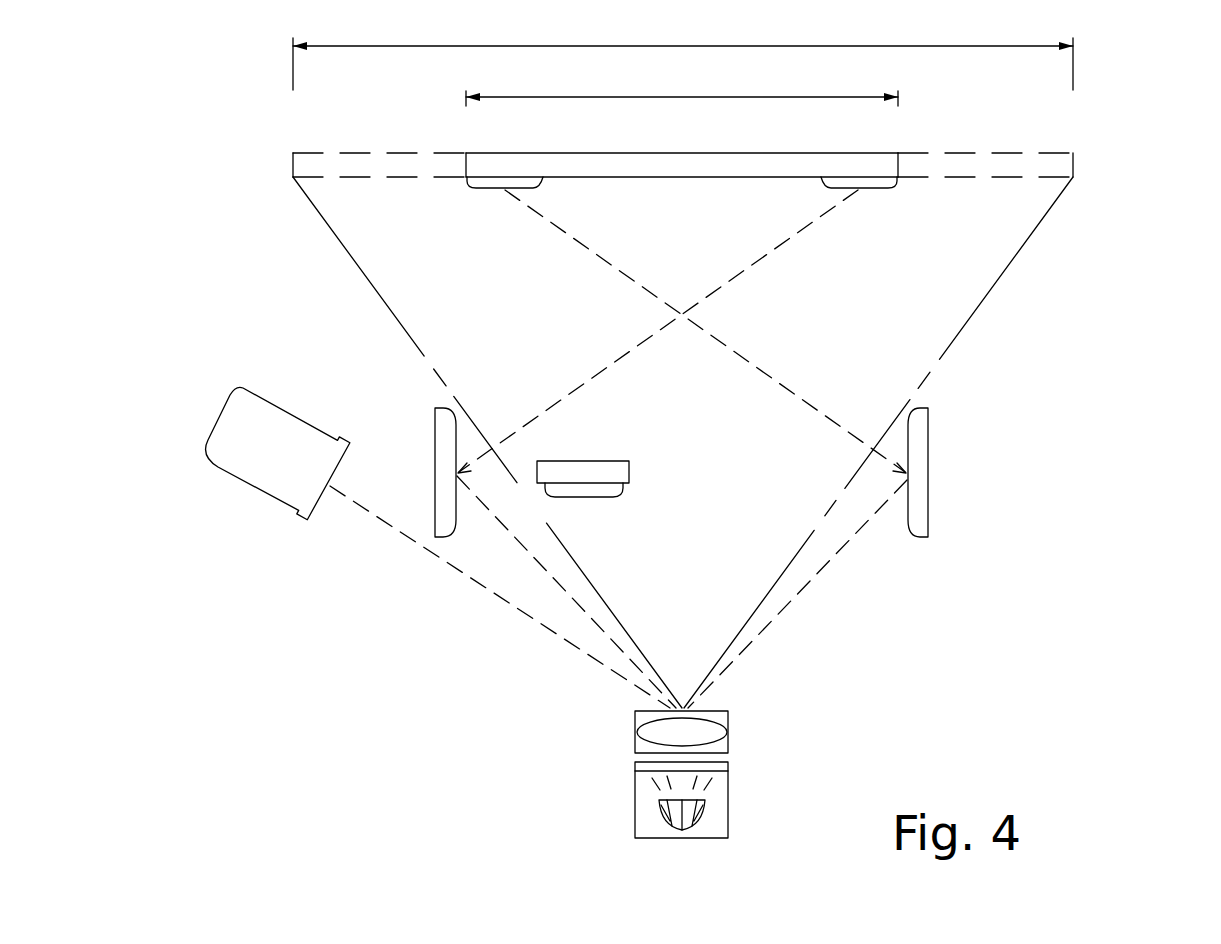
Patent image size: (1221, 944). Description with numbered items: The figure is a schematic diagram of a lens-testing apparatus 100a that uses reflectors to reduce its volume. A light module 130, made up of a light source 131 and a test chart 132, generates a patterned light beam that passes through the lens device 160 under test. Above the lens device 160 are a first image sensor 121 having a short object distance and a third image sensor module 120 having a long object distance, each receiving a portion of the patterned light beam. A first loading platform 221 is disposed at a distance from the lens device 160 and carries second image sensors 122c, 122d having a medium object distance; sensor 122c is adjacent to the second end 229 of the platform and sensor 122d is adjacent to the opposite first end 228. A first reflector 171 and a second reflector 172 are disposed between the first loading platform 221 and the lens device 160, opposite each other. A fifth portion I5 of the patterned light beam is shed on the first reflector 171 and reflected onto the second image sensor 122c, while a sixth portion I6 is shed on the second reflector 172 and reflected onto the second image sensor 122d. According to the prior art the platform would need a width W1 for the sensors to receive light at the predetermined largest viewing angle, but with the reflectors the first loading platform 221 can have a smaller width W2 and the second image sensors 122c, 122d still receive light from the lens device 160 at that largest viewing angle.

The lens-testing apparatus 100a is at (1205, 110).
The width W1 is at (683, 53).
The width W2 is at (682, 87).
The first loading platform 221 is at (613, 162).
The second end 229 is at (466, 163).
The first end 228 is at (898, 163).
The second image sensor 122c is at (480, 185).
The second image sensor 122d is at (890, 185).
The fifth portion of the patterned light beam I5 is at (705, 331).
The sixth portion of the patterned light beam I6 is at (658, 331).
The third image sensor module 120 is at (245, 402).
The first image sensor 121 is at (545, 487).
The second reflector 172 is at (438, 520).
The first reflector 171 is at (918, 513).
The lens device 160 is at (728, 735).
The light module 130 is at (691, 795).
The test chart 132 is at (635, 770).
The light source 131 is at (659, 800).